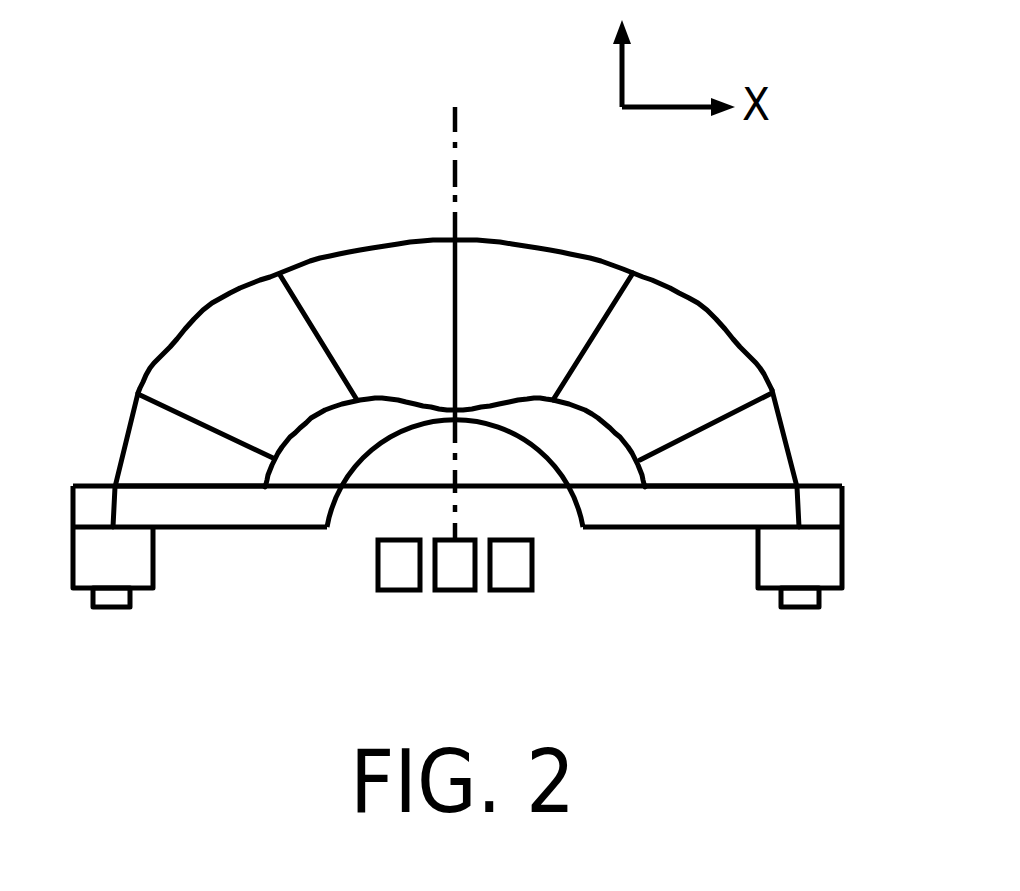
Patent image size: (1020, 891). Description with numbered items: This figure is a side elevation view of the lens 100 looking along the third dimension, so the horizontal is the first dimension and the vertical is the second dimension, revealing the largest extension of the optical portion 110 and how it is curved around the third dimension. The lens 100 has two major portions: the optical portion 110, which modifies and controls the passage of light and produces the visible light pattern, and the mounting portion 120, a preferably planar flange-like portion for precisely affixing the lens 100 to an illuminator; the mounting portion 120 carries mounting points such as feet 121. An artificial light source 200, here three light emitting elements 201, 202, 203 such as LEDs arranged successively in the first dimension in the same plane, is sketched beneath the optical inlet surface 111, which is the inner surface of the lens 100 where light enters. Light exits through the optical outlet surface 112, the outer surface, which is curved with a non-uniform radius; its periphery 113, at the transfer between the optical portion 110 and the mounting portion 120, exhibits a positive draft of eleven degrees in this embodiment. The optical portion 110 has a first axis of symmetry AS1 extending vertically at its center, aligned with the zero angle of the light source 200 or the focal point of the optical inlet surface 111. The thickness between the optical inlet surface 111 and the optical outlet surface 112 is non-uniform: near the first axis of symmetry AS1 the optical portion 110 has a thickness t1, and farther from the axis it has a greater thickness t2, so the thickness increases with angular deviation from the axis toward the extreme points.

The lens 100 is at (414, 302).
The optical portion 110 is at (360, 270).
The optical inlet surface 111 is at (556, 504).
The optical outlet surface 112 is at (725, 297).
The periphery 113 is at (102, 445).
The mounting portion 120 is at (495, 531).
The feet 121 is at (138, 553).
The light source 200 is at (524, 616).
The light emitting element 201 is at (400, 573).
The light emitting element 202 is at (455, 567).
The light emitting element 203 is at (512, 570).
The first axis of symmetry AS1 is at (453, 293).
The thickness t1 is at (504, 222).
The thickness t2 is at (800, 422).